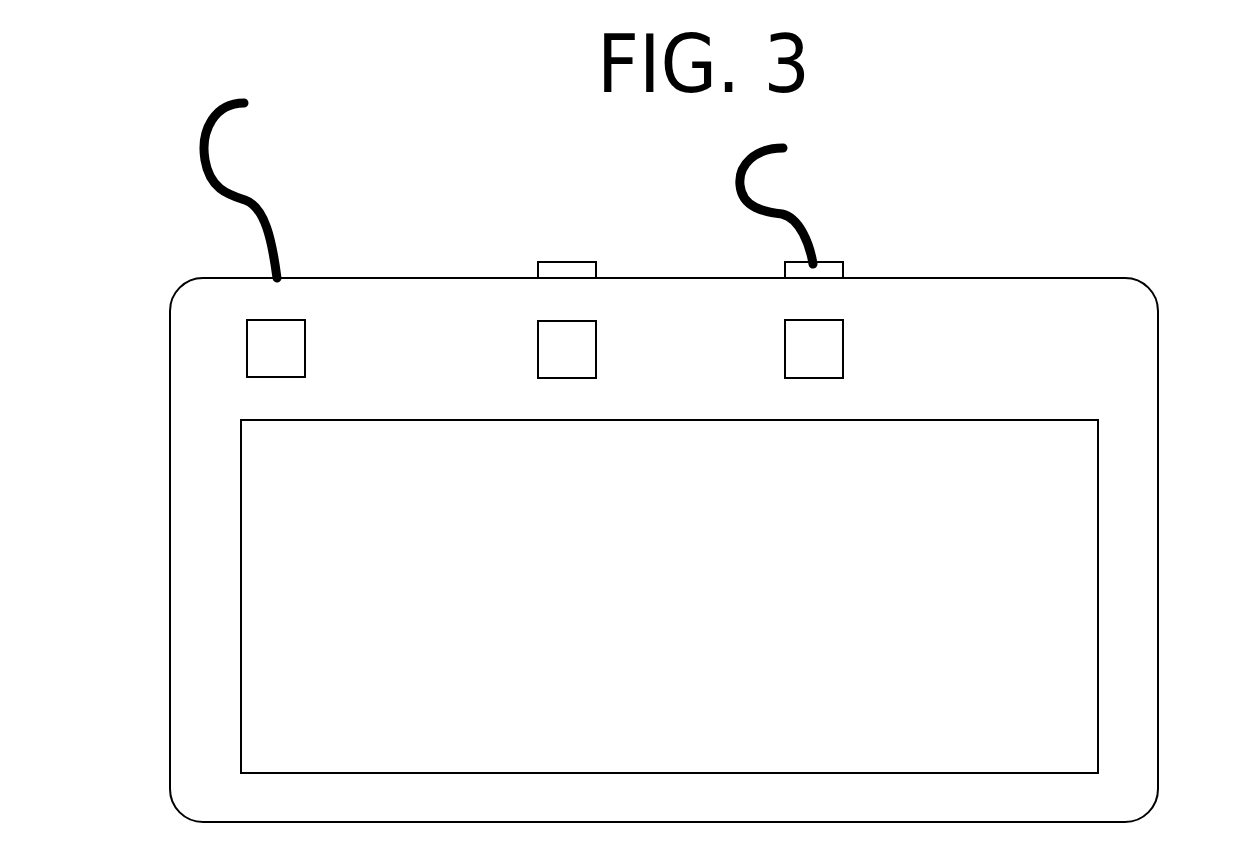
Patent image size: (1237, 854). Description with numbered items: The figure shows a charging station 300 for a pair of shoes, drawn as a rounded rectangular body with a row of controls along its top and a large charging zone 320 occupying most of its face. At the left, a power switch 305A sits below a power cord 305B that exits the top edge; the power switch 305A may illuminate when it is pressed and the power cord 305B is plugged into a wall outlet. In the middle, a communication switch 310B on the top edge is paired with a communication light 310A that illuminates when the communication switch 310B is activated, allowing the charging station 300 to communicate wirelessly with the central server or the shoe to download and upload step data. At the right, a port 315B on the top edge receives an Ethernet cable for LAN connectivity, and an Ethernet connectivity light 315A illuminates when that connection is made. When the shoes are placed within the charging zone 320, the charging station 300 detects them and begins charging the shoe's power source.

The charging station 300 is at (223, 42).
The power switch 305A is at (305, 320).
The power cord 305B is at (253, 203).
The communication light 310A is at (568, 319).
The communication switch 310B is at (568, 262).
The Ethernet connectivity light 315A is at (815, 320).
The port 315B is at (786, 261).
The charging zone 320 is at (1016, 583).